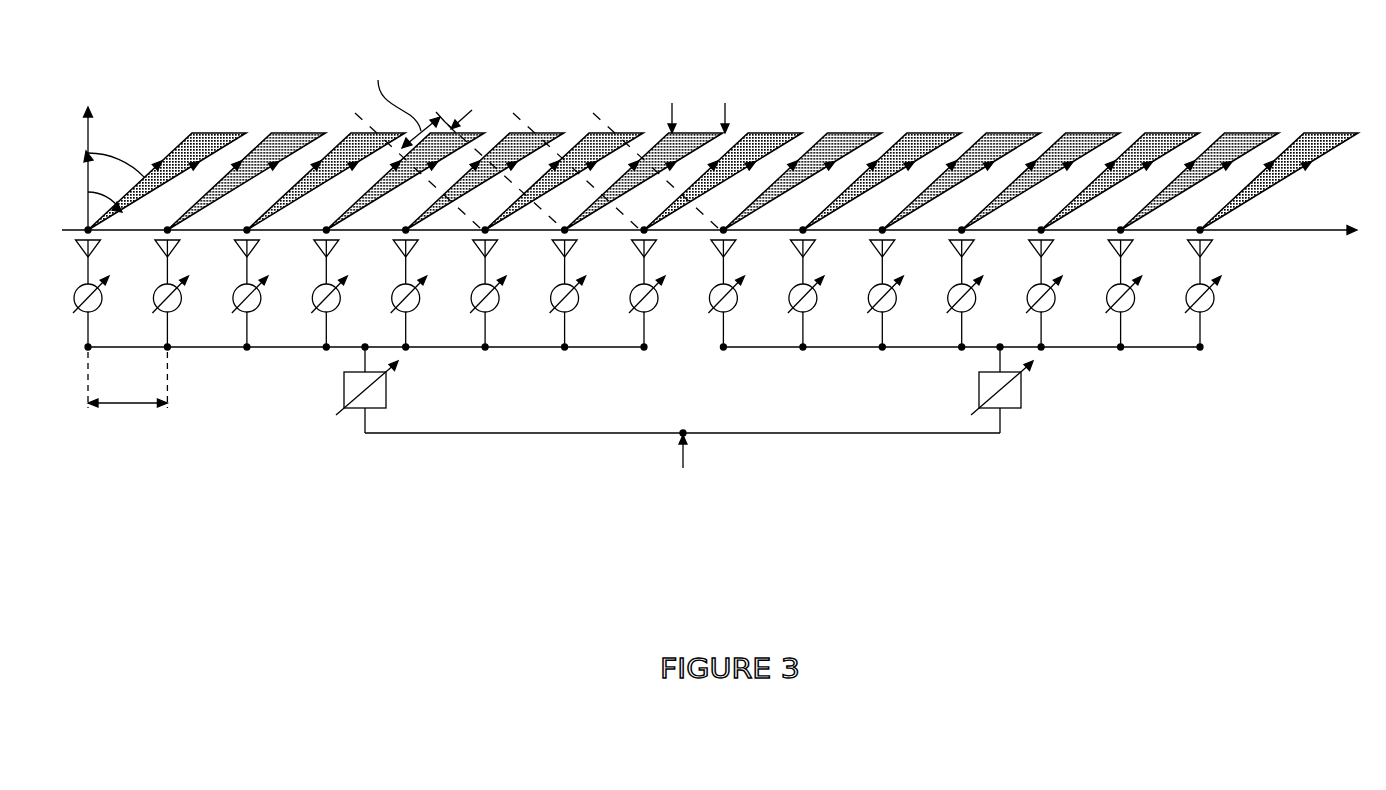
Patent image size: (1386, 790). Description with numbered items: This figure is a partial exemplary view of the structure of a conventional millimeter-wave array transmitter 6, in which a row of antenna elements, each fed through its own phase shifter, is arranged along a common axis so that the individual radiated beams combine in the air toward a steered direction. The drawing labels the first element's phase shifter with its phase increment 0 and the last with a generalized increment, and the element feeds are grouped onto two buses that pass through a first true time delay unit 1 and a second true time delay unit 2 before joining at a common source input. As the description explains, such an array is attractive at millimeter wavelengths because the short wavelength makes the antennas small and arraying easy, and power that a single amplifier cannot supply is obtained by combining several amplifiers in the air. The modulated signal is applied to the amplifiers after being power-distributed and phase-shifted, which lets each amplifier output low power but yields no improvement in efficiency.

The phased array antenna system 6 is at (717, 330).
The true time delay unit τ 1 is at (471, 388).
The true time delay unit τ 2 is at (1107, 388).
The phase shifter ΔΦ 0 is at (109, 295).